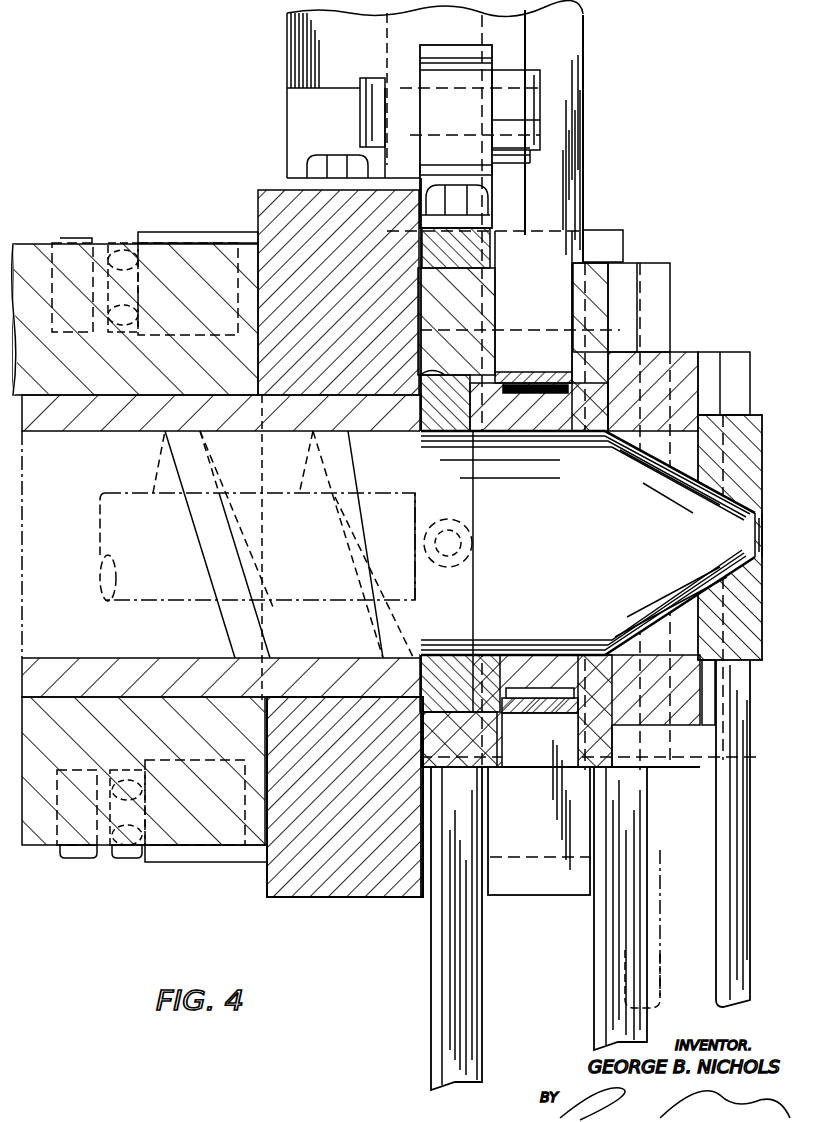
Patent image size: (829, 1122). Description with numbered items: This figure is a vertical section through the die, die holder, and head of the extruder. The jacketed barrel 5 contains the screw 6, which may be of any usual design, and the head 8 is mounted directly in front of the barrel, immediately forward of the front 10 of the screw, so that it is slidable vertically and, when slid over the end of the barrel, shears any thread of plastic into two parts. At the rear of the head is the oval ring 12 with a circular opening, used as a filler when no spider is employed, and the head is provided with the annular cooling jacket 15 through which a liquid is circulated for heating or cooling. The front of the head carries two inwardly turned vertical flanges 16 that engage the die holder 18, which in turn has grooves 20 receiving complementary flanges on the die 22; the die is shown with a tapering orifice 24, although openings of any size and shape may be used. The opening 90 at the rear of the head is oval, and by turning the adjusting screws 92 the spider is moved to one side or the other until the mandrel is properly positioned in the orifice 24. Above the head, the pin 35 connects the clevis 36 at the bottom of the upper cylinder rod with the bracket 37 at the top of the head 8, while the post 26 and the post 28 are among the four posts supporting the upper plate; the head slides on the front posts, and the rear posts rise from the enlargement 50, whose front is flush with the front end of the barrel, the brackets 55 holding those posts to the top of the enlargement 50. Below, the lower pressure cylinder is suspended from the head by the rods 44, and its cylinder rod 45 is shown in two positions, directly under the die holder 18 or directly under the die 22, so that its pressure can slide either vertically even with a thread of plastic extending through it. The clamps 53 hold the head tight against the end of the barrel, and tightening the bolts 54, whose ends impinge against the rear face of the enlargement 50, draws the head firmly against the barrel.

The jacketed barrel 5 is at (45, 843).
The screw 6 is at (135, 494).
The head 8 is at (627, 230).
The front of the screw 10 is at (421, 448).
The oval ring 12 is at (448, 662).
The annular cooling jacket 15 is at (545, 372).
The vertical flanges 16 is at (662, 277).
The die holder 18 is at (685, 352).
The grooves 20 is at (715, 382).
The die 22 is at (755, 470).
The tapering orifice 24 is at (750, 560).
The post 26 is at (578, 135).
The post 28 is at (290, 58).
The pin 35 is at (535, 90).
The clevis 36 is at (513, 31).
The bracket 37 is at (488, 172).
The rods 44 is at (431, 1037).
The cylinder rod 45 is at (715, 855).
The enlargement 50 is at (296, 900).
The clamps 53 is at (206, 232).
The bolts 54 is at (68, 240).
The brackets 55 is at (295, 124).
The opening 90 is at (417, 375).
The adjusting screws 92 is at (462, 520).